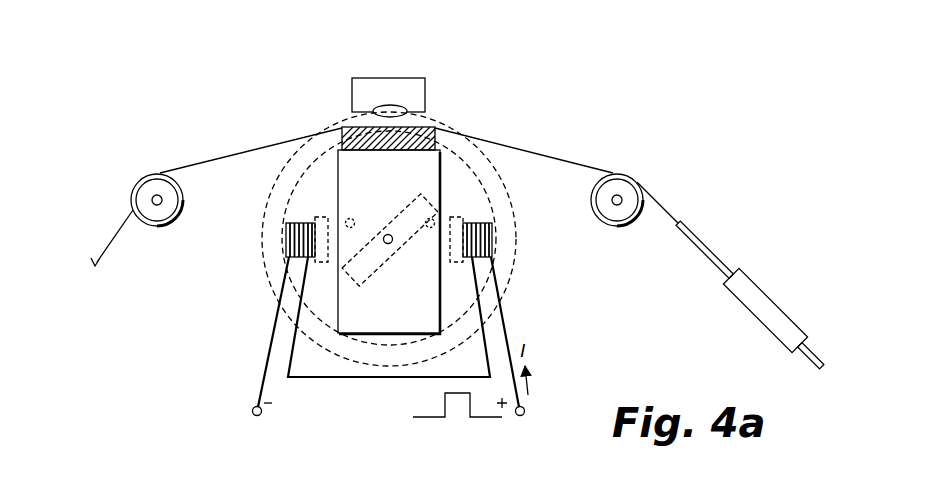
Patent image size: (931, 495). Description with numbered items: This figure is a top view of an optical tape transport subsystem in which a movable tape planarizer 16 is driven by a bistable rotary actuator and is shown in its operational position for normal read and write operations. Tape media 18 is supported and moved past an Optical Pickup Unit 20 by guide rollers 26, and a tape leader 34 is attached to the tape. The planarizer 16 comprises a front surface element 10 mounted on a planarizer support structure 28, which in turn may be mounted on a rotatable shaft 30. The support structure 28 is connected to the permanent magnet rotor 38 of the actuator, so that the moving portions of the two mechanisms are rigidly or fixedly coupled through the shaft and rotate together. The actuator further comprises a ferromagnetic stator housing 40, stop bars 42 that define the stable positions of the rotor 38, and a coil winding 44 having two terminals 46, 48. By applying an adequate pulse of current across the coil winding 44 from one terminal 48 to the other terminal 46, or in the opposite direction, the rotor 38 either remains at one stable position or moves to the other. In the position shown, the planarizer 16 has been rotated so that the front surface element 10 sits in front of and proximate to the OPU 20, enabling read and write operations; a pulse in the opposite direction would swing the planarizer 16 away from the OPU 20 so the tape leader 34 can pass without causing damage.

The front surface element 10 is at (410, 140).
The movable tape planarizer 16 is at (257, 308).
The tape media 18 is at (111, 224).
The Optical Pickup Unit 20 is at (352, 95).
The guide rollers 26 is at (160, 230).
The planarizer support structure 28 is at (338, 151).
The rotatable shaft 30 is at (385, 235).
The tape leader 34 is at (773, 302).
The permanent magnet rotor 38 is at (390, 244).
The ferromagnetic stator housing 40 is at (516, 242).
The stop bars 42 is at (346, 220).
The coil winding 44 is at (292, 223).
The terminal 46 is at (257, 416).
The terminal 48 is at (520, 416).